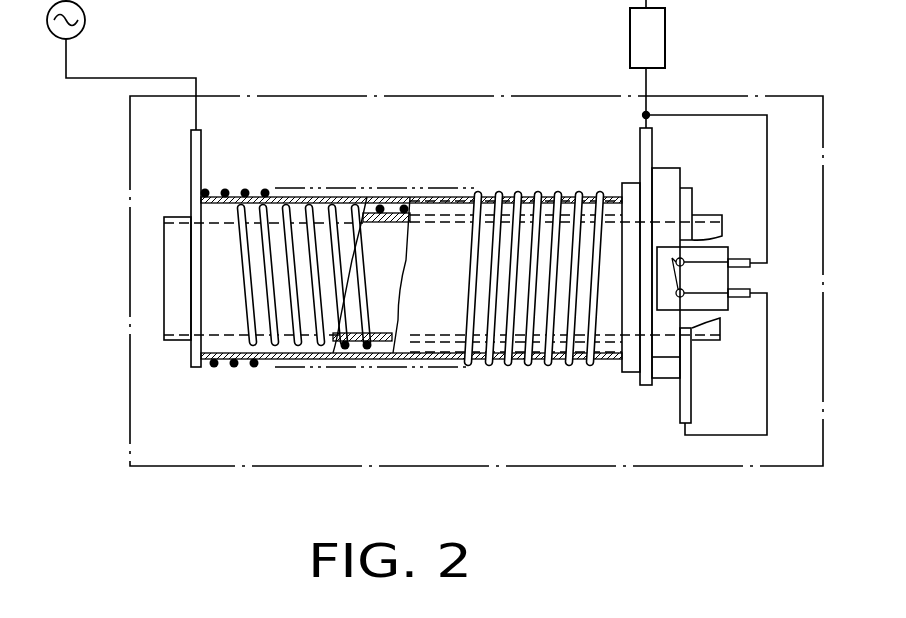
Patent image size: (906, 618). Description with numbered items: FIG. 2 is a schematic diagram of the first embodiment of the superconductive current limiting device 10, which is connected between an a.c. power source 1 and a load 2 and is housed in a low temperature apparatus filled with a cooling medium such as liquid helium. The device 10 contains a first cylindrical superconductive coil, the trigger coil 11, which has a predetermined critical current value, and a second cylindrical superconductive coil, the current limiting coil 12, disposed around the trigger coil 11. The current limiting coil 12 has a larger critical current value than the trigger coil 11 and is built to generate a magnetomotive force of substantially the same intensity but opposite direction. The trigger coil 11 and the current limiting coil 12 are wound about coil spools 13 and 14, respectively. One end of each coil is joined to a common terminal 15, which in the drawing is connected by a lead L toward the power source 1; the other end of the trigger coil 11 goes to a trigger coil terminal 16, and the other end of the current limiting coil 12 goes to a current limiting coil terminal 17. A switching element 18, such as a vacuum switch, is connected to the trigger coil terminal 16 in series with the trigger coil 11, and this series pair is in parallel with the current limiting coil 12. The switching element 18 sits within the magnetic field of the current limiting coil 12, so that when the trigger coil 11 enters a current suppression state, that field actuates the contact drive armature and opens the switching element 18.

The a.c. power source 1 is at (84, 8).
The load 2 is at (665, 35).
The superconductive current limiting device 10 is at (437, 97).
The trigger coil 11 is at (358, 207).
The current limiting coil 12 is at (247, 191).
The coil spool 13 is at (173, 345).
The coil spool 14 is at (320, 200).
The common terminal 15 is at (190, 149).
The trigger coil terminal 16 is at (679, 409).
The current limiting coil terminal 17 is at (639, 146).
The switching element 18 is at (716, 303).
The lead wire L is at (88, 80).